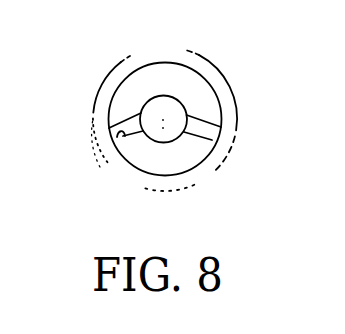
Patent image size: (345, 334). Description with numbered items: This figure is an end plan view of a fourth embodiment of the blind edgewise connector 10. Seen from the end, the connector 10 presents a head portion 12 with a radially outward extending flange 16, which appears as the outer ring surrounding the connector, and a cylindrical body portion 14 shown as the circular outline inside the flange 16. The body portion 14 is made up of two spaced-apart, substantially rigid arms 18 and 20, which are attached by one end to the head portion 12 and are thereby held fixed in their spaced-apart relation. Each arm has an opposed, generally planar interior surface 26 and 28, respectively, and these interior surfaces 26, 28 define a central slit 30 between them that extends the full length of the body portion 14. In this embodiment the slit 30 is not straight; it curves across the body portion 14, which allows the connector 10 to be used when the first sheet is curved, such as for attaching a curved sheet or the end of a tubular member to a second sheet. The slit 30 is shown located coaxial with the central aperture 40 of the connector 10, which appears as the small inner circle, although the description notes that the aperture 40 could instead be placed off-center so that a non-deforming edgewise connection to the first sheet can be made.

The edgewise connector 10 is at (94, 67).
The head portion 12 is at (230, 93).
The cylindrical body portion 14 is at (143, 175).
The flange 16 is at (131, 57).
The arm 18 is at (165, 73).
The arm 20 is at (193, 153).
The interior surface 26 is at (113, 131).
The interior surface 28 is at (117, 138).
The slit 30 is at (212, 135).
The aperture 40 is at (173, 108).